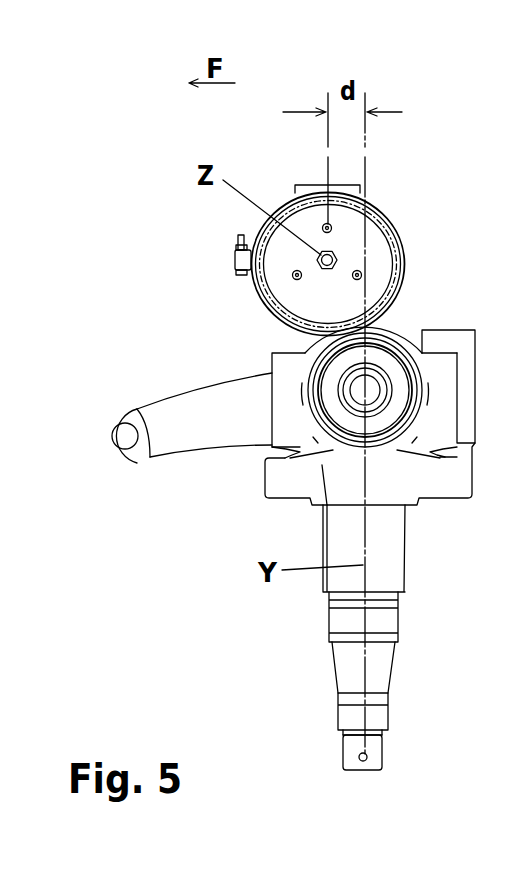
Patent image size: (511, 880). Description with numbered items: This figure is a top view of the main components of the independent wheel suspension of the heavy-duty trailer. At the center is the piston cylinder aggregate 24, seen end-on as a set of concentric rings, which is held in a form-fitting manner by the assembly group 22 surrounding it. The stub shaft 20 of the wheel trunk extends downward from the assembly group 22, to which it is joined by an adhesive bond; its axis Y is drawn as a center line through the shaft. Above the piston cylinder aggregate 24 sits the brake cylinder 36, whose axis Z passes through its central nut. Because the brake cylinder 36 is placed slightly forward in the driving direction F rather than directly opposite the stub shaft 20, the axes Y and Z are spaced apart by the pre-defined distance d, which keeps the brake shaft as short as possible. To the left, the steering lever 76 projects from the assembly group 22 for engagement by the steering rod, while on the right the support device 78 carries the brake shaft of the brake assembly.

The stub shaft 20 is at (345, 657).
The assembly group 22 is at (442, 487).
The piston cylinder aggregate 24 is at (380, 357).
The brake cylinder 36 is at (375, 232).
The steering lever 76 is at (198, 427).
The support device 78 is at (458, 338).